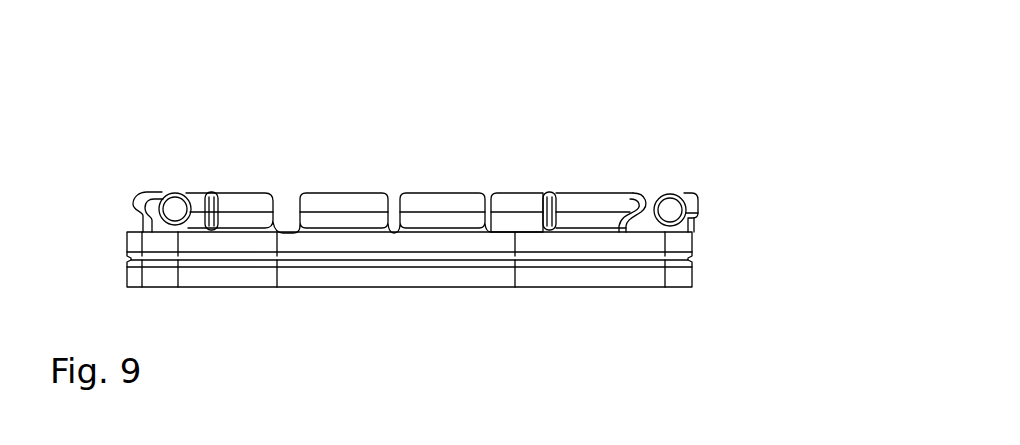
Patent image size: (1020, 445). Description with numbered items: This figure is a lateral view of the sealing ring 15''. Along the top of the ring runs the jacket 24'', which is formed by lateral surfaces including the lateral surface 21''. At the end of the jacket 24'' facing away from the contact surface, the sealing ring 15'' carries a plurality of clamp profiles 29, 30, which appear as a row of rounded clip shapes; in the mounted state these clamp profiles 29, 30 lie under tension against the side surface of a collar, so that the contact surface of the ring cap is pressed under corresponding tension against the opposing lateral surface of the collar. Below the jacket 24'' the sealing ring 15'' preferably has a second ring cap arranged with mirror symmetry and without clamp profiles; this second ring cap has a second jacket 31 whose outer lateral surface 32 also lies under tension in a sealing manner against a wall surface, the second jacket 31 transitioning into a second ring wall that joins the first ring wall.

The sealing ring 15'' is at (428, 195).
The clamp profile 29 is at (200, 205).
The clamp profile 30 is at (143, 203).
The lateral surface 21'' is at (473, 248).
The jacket 24'' is at (403, 311).
The second jacket 31 is at (590, 277).
The outer lateral surface 32 is at (702, 270).